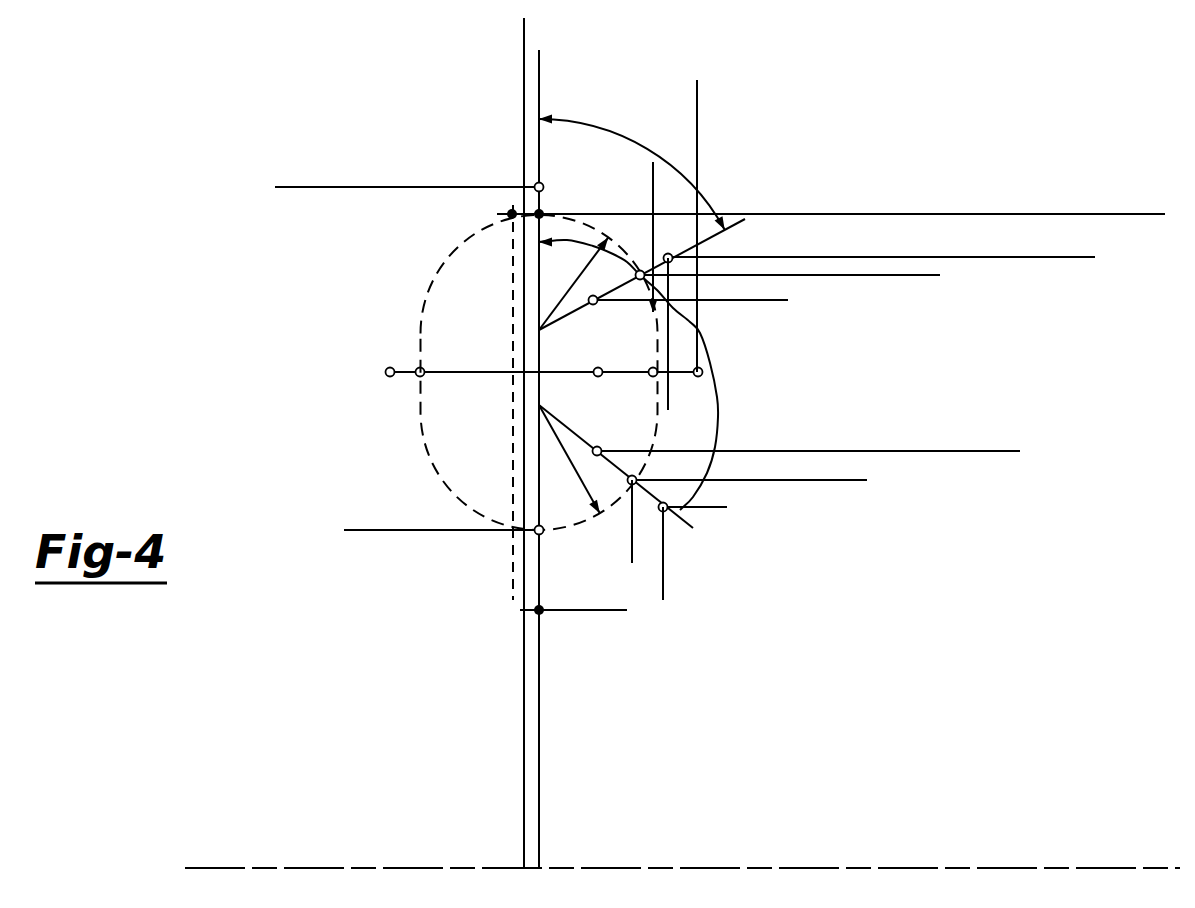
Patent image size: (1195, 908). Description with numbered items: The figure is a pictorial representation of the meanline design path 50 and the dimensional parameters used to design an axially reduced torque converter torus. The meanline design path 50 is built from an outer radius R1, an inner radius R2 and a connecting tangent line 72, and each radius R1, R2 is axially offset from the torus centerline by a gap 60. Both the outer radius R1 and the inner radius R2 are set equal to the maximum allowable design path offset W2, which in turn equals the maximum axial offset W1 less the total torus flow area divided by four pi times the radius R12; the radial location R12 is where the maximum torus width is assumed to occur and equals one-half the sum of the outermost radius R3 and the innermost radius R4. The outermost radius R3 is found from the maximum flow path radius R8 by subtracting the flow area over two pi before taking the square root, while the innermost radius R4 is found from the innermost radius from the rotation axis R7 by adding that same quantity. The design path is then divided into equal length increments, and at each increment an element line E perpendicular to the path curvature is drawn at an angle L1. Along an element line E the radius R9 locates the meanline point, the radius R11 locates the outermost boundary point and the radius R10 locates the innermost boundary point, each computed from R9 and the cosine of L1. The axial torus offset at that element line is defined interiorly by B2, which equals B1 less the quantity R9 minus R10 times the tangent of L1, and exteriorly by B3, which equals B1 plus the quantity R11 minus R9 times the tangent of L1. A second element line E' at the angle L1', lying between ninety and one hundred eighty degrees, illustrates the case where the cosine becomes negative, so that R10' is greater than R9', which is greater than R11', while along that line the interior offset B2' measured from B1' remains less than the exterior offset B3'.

The meanline design path 50 is at (446, 260).
The gap 60 is at (485, 63).
The connecting tangent line 72 is at (655, 314).
The angle of element line L1 is at (657, 173).
The angle of element line (obtuse case) L1' is at (688, 367).
The outer radius R1 is at (569, 289).
The inner radius R2 is at (568, 455).
The outermost radius R3 is at (1155, 868).
The innermost radius R4 is at (366, 868).
The innermost radius from the rotation axis R7 is at (605, 610).
The maximum flow path radius R8 is at (285, 868).
The radius to meanline design path point R9 is at (913, 571).
The radius to meanline point at obtuse element line R9' is at (838, 674).
The radius to innermost boundary point R10 is at (758, 584).
The radius to innermost boundary point at obtuse element line R10' is at (992, 659).
The radius to outermost flow path point R11 is at (1067, 562).
The radius to outermost boundary point at obtuse element line R11' is at (708, 687).
The radial location of maximum torus width R12 is at (440, 372).
The maximum axial offset W1 is at (539, 97).
The maximum allowable design path offset W2 is at (539, 169).
The axial position of meanline point B1 is at (560, 391).
The axial position of meanline point at obtuse element line B1' is at (543, 525).
The interior axial torus offset B2 is at (534, 355).
The interior axial torus offset at obtuse element line B2' is at (621, 436).
The exterior axial torus offset B3 is at (618, 338).
The exterior axial torus offset at obtuse element line B3' is at (559, 557).
The element line E is at (756, 199).
The element line (obtuse case) E' is at (682, 557).